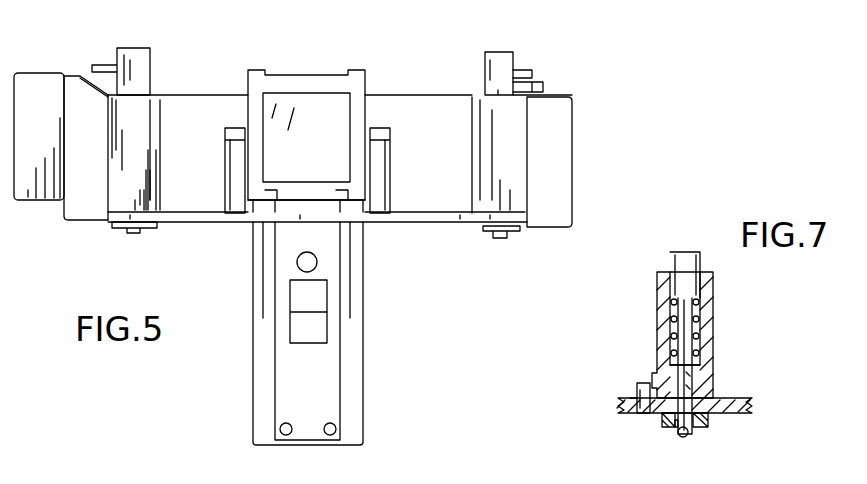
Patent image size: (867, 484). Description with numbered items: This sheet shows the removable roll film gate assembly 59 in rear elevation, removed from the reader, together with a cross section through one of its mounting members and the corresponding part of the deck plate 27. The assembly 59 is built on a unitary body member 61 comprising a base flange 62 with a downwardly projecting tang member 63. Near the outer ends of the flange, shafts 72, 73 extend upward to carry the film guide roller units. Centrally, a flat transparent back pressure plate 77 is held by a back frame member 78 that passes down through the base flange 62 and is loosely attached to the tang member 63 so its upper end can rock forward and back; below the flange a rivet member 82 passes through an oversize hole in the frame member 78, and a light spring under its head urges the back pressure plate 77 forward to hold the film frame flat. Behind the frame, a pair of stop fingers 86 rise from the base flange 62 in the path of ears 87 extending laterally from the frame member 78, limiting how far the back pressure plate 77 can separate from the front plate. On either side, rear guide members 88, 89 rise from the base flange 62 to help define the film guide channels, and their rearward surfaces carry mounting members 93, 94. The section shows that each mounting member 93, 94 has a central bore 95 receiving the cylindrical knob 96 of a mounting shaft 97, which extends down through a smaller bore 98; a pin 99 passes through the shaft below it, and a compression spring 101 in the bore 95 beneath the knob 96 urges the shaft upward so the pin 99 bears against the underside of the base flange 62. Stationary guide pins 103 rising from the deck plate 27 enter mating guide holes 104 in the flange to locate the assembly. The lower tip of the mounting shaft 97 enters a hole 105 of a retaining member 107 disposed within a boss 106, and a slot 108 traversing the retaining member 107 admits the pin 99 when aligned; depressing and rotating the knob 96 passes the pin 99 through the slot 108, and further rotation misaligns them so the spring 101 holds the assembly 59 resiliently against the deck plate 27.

In FIG. 7, the deck plate 27 is at (750, 405).
In FIG. 5, the roll film gate assembly 59 is at (574, 113).
In FIG. 5, the unitary body member 61 is at (437, 92).
In FIG. 5, the base flange 62 is at (436, 220).
In FIG. 5, the tang member 63 is at (367, 320).
In FIG. 5, the shaft 72 is at (525, 70).
In FIG. 5, the shaft 73 is at (111, 65).
In FIG. 5, the back pressure plate 77 is at (328, 103).
In FIG. 5, the back frame member 78 is at (368, 78).
In FIG. 5, the rivet member 82 is at (312, 263).
In FIG. 5, the stop fingers 86 is at (408, 185).
In FIG. 5, the ears 87 is at (390, 130).
In FIG. 5, the rear guide member 88 is at (456, 115).
In FIG. 5, the rear guide member 89 is at (178, 103).
In FIG. 5, the mounting member 93 is at (518, 162).
In FIG. 5, the mounting member 94 is at (148, 135).
In FIG. 7, the mounting member 94 is at (657, 314).
In FIG. 7, the central bore 95 is at (698, 312).
In FIG. 7, the knob 96 is at (670, 256).
In FIG. 7, the mounting shaft 97 is at (692, 387).
In FIG. 7, the smaller bore 98 is at (690, 378).
In FIG. 7, the pin 99 is at (690, 432).
In FIG. 7, the compression spring 101 is at (700, 340).
In FIG. 7, the guide pins 103 is at (644, 383).
In FIG. 7, the guide holes 104 is at (635, 390).
In FIG. 7, the hole 105 is at (682, 440).
In FIG. 7, the boss 106 is at (660, 420).
In FIG. 7, the retaining member 107 is at (675, 425).
In FIG. 7, the slot 108 is at (708, 420).